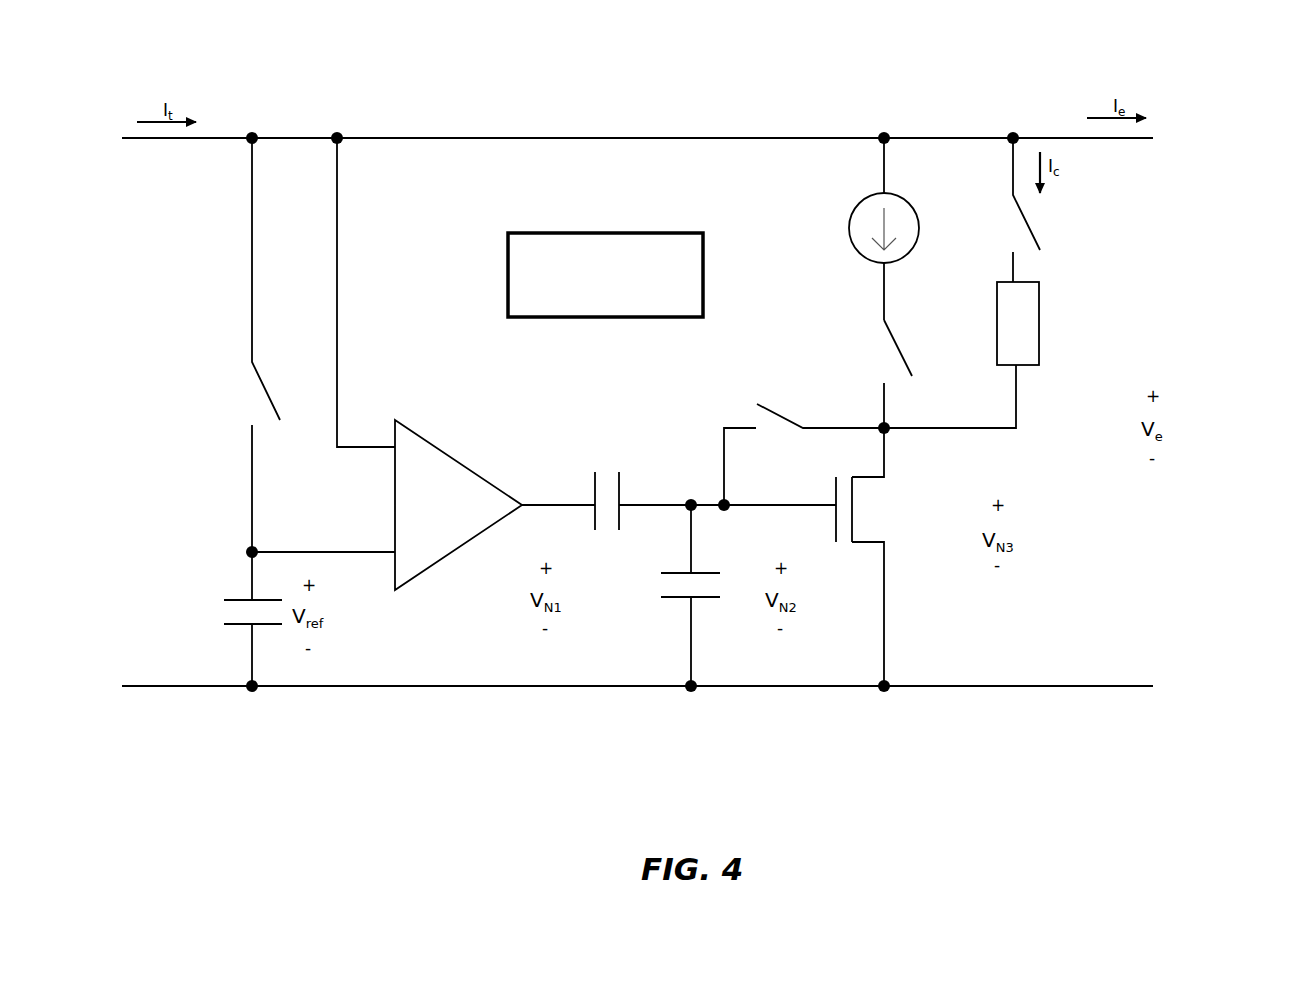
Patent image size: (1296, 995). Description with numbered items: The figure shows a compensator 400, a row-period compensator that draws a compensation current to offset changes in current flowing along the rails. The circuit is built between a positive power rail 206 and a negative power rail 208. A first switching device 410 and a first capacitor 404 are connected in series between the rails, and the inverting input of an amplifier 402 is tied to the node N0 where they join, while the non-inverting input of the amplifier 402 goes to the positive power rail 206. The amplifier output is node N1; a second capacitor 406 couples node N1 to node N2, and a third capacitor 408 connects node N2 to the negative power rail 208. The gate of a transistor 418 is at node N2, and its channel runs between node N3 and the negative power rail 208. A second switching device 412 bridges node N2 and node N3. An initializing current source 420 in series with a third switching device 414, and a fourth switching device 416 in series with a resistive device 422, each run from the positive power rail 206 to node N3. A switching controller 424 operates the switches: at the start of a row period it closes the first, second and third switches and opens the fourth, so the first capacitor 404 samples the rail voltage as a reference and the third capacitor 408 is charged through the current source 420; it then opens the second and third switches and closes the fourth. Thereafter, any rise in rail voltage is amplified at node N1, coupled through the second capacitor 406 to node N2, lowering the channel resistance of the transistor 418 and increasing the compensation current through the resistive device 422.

The positive power rail 206 is at (518, 137).
The negative power rail 208 is at (150, 684).
The compensator 400 is at (1198, 92).
The amplifier 402 is at (458, 505).
The first capacitor 404 is at (210, 610).
The second capacitor 406 is at (580, 476).
The third capacitor 408 is at (653, 590).
The first switching device 410 is at (236, 396).
The second switching device 412 is at (743, 412).
The third switching device 414 is at (884, 356).
The fourth switching device 416 is at (1010, 236).
The transistor 418 is at (884, 517).
The initializing current source 420 is at (841, 222).
The resistive device 422 is at (961, 355).
The switching controller 424 is at (605, 275).
The node N0 is at (238, 548).
The node N1 is at (544, 494).
The node N2 is at (688, 492).
The node N3 is at (874, 418).